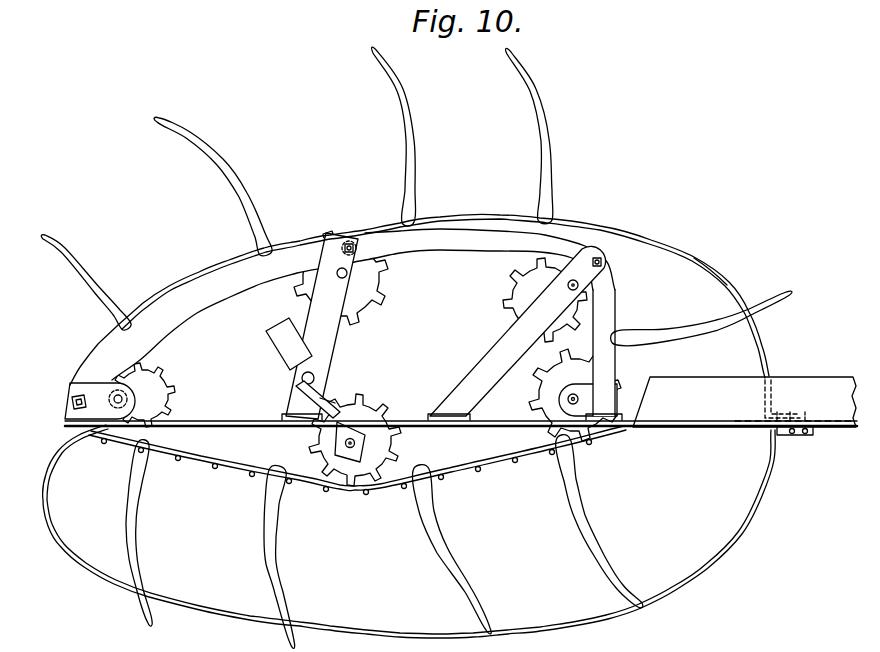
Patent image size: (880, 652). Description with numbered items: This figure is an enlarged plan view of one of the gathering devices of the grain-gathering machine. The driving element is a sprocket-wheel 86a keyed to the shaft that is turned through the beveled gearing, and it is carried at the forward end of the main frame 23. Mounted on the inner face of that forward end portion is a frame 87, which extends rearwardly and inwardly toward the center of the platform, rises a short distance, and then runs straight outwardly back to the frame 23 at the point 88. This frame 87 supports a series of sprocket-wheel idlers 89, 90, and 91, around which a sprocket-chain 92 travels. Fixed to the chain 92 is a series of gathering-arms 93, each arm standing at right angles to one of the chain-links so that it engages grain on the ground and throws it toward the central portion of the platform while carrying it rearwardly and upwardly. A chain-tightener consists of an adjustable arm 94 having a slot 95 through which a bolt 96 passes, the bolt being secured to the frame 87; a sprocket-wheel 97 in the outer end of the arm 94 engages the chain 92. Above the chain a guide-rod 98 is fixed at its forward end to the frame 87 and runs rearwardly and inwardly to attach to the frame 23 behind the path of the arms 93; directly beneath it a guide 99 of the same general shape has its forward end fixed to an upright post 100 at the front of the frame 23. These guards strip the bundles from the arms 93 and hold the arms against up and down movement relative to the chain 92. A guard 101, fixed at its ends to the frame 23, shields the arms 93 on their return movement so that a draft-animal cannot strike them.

The frame 23 is at (461, 406).
The sprocket-wheel 86a is at (582, 374).
The frame 87 is at (333, 344).
The point 88 is at (616, 311).
The sprocket-wheel idler 89 is at (152, 392).
The sprocket-wheel idler 90 is at (383, 285).
The sprocket-wheel idler 91 is at (533, 284).
The sprocket-chain 92 is at (497, 462).
The gathering-arms 93 is at (403, 132).
The adjustable arm 94 is at (331, 387).
The slot 95 is at (328, 400).
The bolt 96 is at (306, 378).
The sprocket-wheel 97 is at (388, 450).
The guide-rod 98 is at (440, 219).
The guide 99 is at (704, 268).
The upright post 100 is at (112, 390).
The guard 101 is at (742, 535).